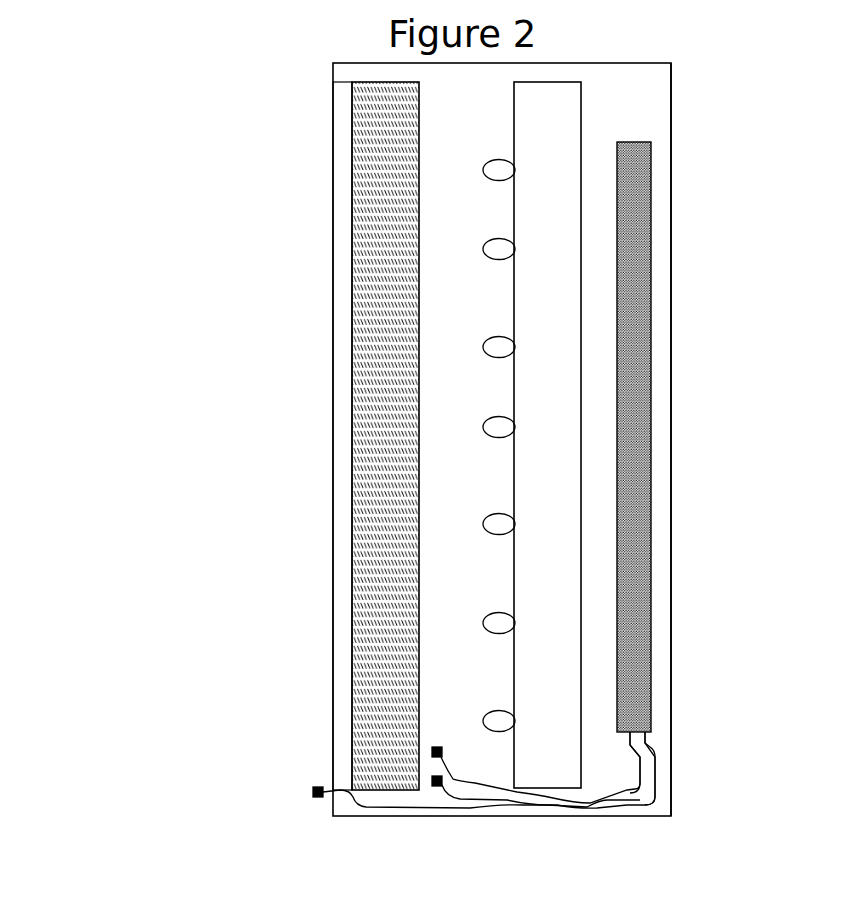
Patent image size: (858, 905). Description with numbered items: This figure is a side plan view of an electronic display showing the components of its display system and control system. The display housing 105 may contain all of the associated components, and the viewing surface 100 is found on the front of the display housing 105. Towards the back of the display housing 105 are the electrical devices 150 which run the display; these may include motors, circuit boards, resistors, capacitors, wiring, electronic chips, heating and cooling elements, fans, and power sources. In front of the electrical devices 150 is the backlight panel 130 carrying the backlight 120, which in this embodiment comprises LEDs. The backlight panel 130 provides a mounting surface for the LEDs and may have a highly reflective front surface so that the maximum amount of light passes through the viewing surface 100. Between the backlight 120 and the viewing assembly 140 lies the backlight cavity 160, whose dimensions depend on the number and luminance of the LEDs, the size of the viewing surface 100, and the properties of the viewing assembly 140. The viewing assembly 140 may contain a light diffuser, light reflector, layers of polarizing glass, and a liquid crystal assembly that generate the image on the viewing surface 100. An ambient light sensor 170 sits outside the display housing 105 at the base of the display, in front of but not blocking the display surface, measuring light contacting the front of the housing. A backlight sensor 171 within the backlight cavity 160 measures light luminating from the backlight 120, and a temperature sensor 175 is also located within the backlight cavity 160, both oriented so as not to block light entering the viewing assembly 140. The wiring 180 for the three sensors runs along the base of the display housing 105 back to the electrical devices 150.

The viewing surface 100 is at (343, 272).
The display housing 105 is at (672, 508).
The backlight 120 is at (482, 168).
The backlight panel 130 is at (553, 122).
The viewing assembly 140 is at (360, 653).
The electrical devices 150 is at (635, 659).
The backlight cavity 160 is at (450, 457).
The ambient light sensor 170 is at (312, 783).
The backlight sensor 171 is at (445, 760).
The temperature sensor 175 is at (428, 788).
The wiring 180 is at (643, 787).